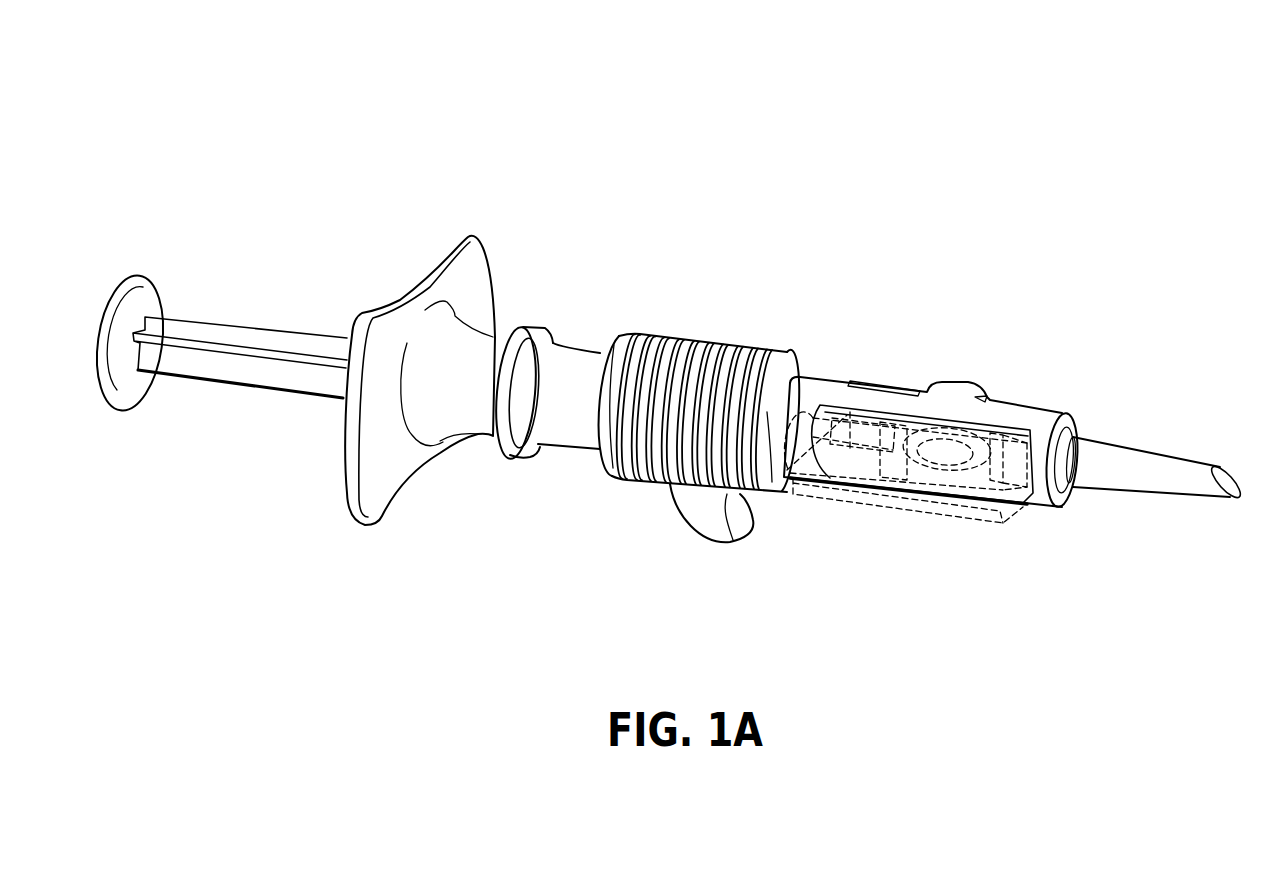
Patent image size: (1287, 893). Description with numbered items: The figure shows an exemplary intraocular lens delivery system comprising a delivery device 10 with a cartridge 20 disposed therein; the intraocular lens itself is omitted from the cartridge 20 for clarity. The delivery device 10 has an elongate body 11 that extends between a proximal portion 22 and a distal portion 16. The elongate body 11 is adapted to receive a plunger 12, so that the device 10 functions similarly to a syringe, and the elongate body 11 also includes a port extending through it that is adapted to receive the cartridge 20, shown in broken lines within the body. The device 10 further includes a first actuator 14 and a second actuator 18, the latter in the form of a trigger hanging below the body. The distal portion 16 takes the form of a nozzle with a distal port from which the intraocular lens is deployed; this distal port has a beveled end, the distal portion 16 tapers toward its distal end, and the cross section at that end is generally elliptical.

The delivery device 10 is at (533, 112).
The plunger 12 is at (183, 272).
The proximal portion 22 is at (443, 237).
The elongate body 11 is at (583, 318).
The first actuator 14 is at (723, 318).
The distal portion 16 is at (1195, 435).
The second actuator 18 is at (692, 545).
The cartridge 20 is at (886, 537).